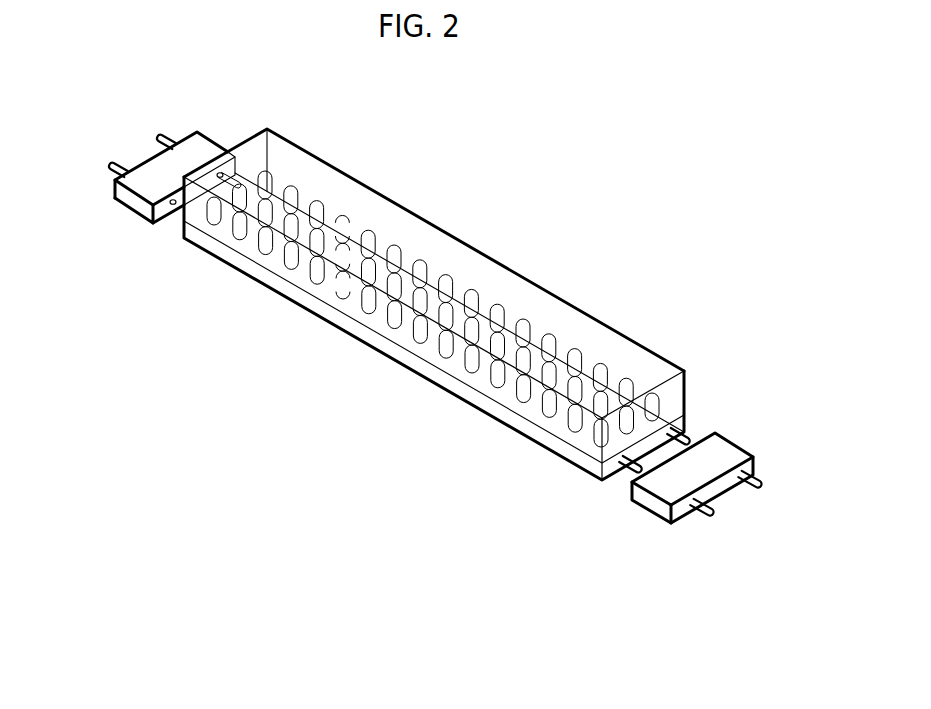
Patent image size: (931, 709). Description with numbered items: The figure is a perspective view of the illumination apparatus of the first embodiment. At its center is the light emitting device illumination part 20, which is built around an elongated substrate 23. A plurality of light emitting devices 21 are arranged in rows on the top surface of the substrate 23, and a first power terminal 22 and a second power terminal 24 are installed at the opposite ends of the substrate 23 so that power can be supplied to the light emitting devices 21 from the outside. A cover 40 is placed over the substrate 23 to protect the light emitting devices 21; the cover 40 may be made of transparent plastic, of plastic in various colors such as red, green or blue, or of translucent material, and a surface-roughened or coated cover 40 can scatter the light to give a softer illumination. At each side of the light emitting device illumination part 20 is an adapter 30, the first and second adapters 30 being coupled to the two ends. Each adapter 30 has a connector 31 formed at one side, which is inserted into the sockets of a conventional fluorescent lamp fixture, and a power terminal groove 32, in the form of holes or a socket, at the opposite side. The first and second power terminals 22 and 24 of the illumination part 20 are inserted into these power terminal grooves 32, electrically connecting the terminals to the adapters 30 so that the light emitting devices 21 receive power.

The light emitting device illumination part 20 is at (428, 402).
The light emitting devices 21 is at (523, 403).
The first power terminal 22 is at (183, 213).
The substrate 23 is at (547, 443).
The second power terminal 24 is at (625, 470).
The adapter 30 is at (124, 220).
The connector 31 is at (122, 167).
The power terminal groove 32 is at (172, 199).
The cover 40 is at (494, 270).